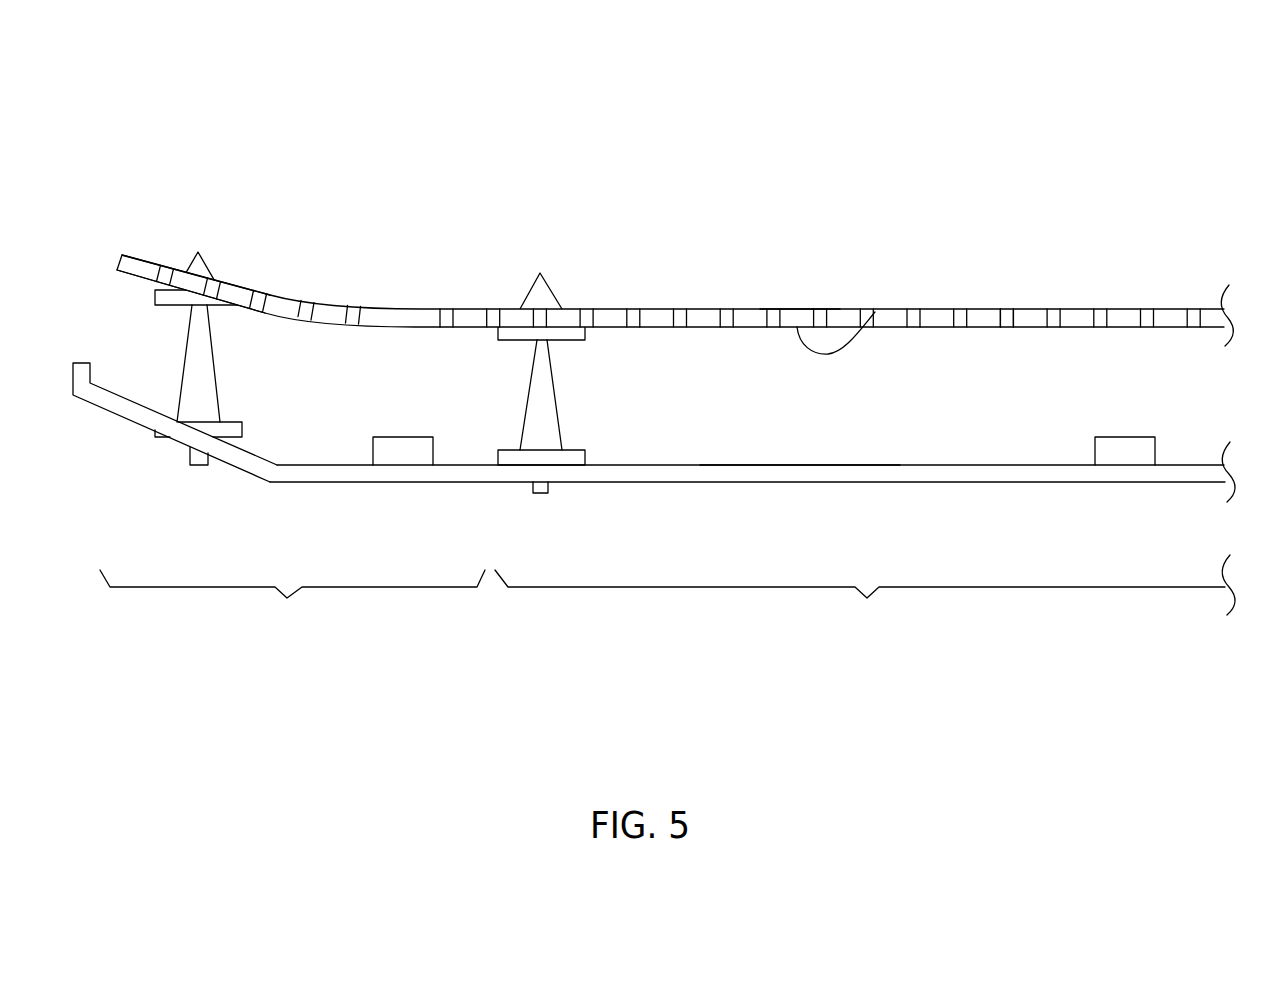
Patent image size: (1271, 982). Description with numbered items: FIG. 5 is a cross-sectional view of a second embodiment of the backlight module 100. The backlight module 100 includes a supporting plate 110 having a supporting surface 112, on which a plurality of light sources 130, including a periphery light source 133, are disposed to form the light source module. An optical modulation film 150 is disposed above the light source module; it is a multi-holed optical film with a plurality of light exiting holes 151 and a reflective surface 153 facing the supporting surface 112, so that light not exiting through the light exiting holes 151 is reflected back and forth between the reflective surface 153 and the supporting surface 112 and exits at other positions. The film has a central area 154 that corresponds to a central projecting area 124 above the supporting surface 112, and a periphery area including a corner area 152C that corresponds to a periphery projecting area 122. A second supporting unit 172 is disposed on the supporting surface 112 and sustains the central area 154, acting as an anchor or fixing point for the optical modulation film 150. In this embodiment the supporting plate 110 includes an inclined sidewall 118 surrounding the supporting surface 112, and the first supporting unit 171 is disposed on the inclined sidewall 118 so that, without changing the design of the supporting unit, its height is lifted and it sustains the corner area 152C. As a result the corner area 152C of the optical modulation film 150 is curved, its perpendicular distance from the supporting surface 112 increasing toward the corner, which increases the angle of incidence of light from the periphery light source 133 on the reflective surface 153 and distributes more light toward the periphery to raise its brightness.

The backlight module 100 is at (143, 115).
The supporting plate 110 is at (750, 478).
The supporting surface 112 is at (823, 465).
The inclined sidewall 118 is at (122, 408).
The periphery projecting area 122 is at (292, 601).
The central projecting area 124 is at (865, 594).
The light source 130 is at (1135, 445).
The periphery light source 133 is at (402, 446).
The optical modulation film 150 is at (656, 306).
The light exiting hole 151 is at (1007, 322).
The corner area 152C is at (246, 271).
The reflective surface 153 is at (875, 312).
The central area 154 is at (801, 295).
The first supporting unit 171 is at (203, 407).
The second supporting unit 172 is at (540, 373).